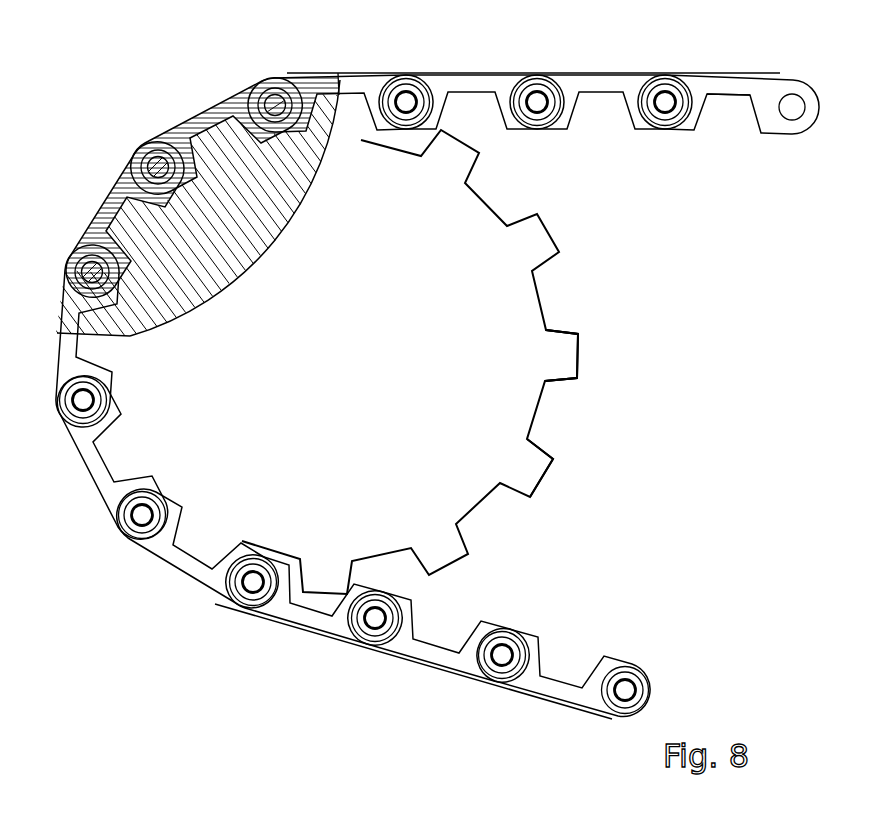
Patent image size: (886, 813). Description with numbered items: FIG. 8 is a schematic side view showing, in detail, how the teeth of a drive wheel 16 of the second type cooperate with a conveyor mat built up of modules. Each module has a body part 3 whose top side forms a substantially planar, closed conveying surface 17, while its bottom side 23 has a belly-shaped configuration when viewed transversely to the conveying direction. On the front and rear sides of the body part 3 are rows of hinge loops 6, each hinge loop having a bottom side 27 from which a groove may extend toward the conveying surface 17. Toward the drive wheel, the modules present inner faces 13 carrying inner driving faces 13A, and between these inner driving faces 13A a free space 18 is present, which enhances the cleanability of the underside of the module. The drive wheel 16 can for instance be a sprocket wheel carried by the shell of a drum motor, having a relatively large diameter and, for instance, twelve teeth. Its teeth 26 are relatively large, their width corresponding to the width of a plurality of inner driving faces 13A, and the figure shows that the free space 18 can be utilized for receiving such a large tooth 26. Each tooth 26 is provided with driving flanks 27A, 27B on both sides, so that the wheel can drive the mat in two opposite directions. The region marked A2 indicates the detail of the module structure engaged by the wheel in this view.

The chain link plate region A2 is at (158, 165).
The inner face 13 is at (272, 179).
The inner driving face 13A is at (325, 103).
The conveying surface 17 is at (468, 72).
The body part 3 is at (434, 368).
The free space 18 is at (586, 136).
The bottom side of the hinge loop 27 is at (643, 130).
The hinge loop 6 is at (687, 125).
The bottom side of the body part 23 is at (727, 44).
The driving flank 27A is at (563, 330).
The tooth 26 is at (558, 357).
The driving flank 27B is at (562, 382).
The drive wheel of a second type 16 is at (443, 468).